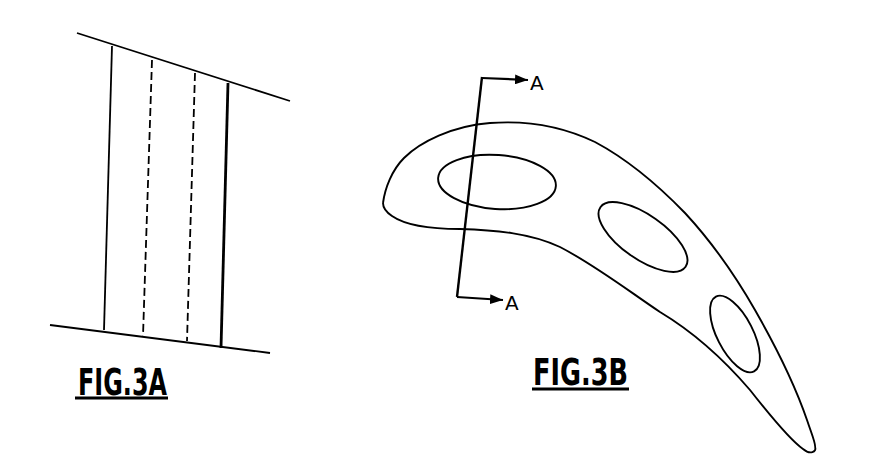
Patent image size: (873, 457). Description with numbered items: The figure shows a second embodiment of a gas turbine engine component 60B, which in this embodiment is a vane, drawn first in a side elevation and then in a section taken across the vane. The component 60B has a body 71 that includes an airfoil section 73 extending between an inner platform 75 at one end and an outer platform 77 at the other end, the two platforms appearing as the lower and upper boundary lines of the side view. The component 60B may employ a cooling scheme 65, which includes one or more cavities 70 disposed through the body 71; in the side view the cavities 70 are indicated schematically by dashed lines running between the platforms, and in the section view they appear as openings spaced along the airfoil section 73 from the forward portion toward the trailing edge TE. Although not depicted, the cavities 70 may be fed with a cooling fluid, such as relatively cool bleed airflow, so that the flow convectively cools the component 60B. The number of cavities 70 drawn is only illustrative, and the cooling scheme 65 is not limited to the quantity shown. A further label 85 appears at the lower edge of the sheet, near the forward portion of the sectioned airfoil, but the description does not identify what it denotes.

In FIG. 3A, the component 60B is at (205, 204).
In FIG. 3B, the component 60B is at (610, 226).
In FIG. 3A, the cooling scheme 65 is at (173, 85).
In FIG. 3A, the cavity 70 is at (193, 177).
In FIG. 3B, the cavity 70 is at (530, 188).
In FIG. 3A, the body 71 is at (90, 150).
In FIG. 3B, the body 71 is at (705, 225).
In FIG. 3A, the airfoil section 73 is at (207, 278).
In FIG. 3B, the airfoil section 73 is at (718, 270).
In FIG. 3A, the inner platform 75 is at (255, 352).
In FIG. 3A, the outer platform 77 is at (275, 102).
In FIG. 3B, the leading edge region 85 is at (476, 447).
In FIG. 3B, the trailing edge TE is at (815, 0).